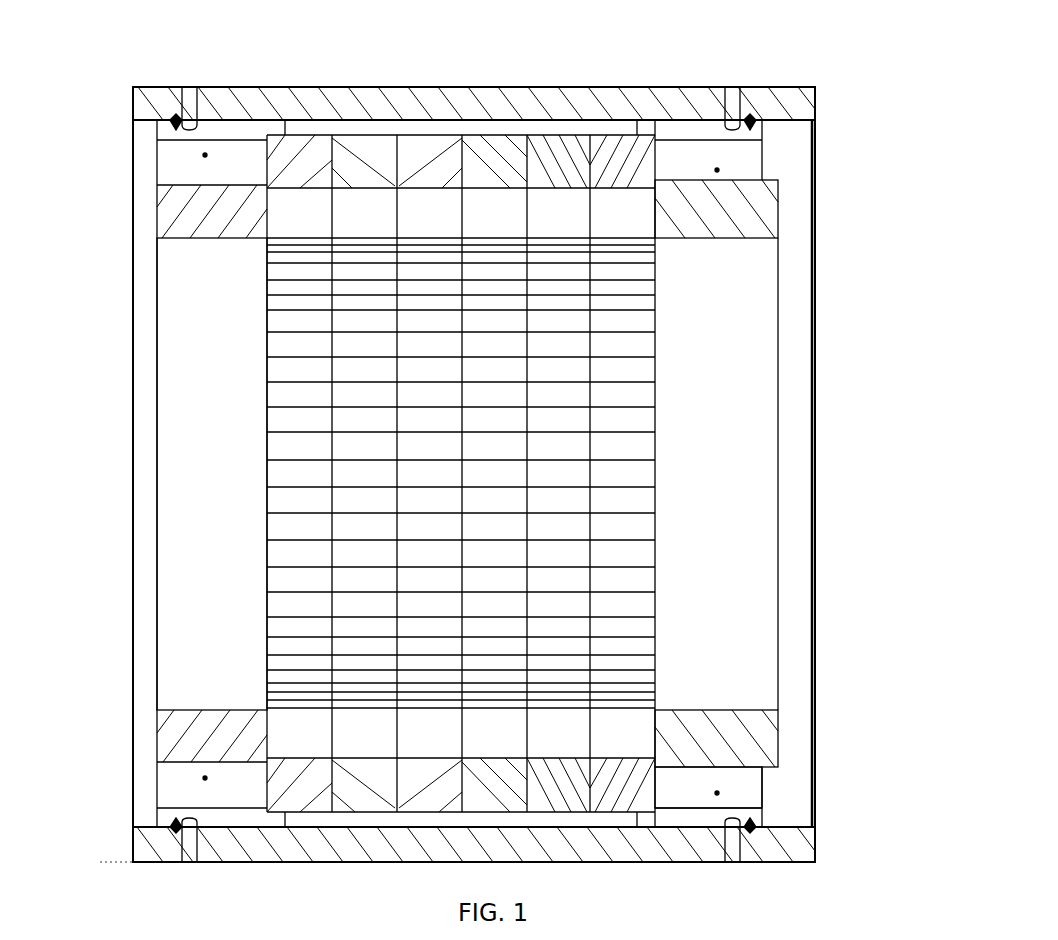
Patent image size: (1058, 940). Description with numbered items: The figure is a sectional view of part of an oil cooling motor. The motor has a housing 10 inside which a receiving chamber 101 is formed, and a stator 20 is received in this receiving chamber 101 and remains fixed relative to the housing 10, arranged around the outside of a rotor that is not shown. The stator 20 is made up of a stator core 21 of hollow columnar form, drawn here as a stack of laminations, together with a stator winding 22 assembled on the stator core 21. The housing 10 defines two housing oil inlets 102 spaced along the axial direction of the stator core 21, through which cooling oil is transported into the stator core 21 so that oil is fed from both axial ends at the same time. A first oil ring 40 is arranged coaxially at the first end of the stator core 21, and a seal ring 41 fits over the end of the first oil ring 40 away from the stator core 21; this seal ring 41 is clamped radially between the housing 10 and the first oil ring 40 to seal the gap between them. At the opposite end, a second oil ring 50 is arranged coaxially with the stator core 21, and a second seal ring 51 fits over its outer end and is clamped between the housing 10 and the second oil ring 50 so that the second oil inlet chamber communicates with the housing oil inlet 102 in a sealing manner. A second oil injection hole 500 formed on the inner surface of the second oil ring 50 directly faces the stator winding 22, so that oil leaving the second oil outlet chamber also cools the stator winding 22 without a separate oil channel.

The housing 10 is at (487, 100).
The receiving chamber 101 is at (210, 340).
The housing oil inlet 102 is at (185, 87).
The stator 20 is at (615, 473).
The stator core 21 is at (640, 375).
The stator winding 22 is at (748, 207).
The first oil ring 40 is at (250, 128).
The seal ring 41 is at (158, 88).
The second oil ring 50 is at (745, 814).
The second oil injection hole 500 is at (718, 790).
The second seal ring 51 is at (785, 834).